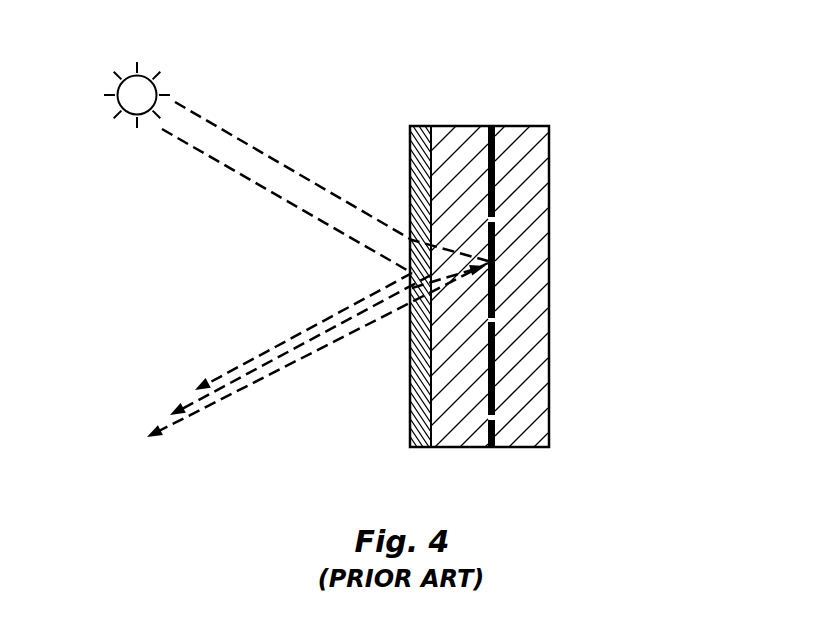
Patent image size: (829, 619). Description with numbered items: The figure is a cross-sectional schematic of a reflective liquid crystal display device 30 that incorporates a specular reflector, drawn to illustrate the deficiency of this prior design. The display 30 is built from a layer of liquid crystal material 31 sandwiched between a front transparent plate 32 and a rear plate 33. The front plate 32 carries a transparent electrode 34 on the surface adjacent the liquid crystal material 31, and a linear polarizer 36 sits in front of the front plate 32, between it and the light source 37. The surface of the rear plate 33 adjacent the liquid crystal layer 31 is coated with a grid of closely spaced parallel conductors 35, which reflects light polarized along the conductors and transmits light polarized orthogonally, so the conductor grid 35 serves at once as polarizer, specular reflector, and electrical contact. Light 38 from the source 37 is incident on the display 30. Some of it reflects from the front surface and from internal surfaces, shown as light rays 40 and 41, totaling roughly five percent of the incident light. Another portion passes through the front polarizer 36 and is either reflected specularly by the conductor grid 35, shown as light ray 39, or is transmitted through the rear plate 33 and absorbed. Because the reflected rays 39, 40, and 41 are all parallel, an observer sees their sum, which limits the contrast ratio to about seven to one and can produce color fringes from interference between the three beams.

The liquid crystal display device 30 is at (701, 78).
The liquid crystal material 31 is at (491, 448).
The front transparent plate 32 is at (462, 125).
The rear plate 33 is at (522, 125).
The transparent electrode 34 is at (491, 448).
The conductor grid 35 is at (491, 448).
The linear polarizer 36 is at (420, 448).
The light source 37 is at (130, 115).
The incident light 38 is at (281, 160).
The light ray reflected by conductor grid 39 is at (262, 375).
The light ray reflected from front surface 40 is at (320, 323).
The light ray reflected from internal surfaces 41 is at (275, 357).